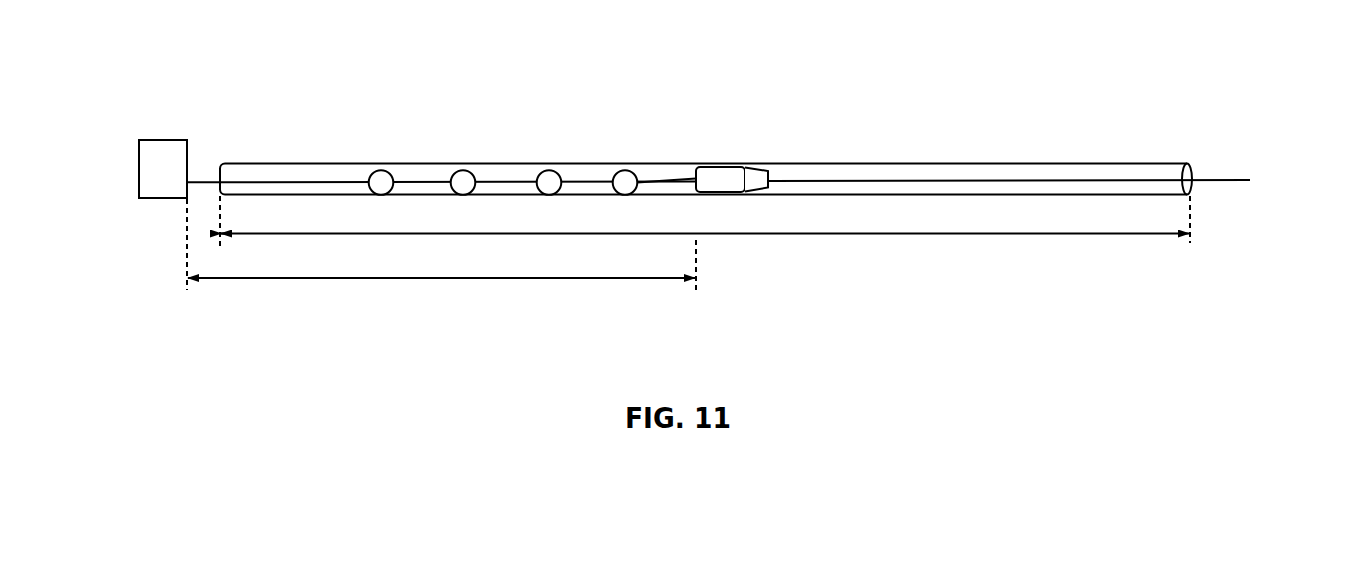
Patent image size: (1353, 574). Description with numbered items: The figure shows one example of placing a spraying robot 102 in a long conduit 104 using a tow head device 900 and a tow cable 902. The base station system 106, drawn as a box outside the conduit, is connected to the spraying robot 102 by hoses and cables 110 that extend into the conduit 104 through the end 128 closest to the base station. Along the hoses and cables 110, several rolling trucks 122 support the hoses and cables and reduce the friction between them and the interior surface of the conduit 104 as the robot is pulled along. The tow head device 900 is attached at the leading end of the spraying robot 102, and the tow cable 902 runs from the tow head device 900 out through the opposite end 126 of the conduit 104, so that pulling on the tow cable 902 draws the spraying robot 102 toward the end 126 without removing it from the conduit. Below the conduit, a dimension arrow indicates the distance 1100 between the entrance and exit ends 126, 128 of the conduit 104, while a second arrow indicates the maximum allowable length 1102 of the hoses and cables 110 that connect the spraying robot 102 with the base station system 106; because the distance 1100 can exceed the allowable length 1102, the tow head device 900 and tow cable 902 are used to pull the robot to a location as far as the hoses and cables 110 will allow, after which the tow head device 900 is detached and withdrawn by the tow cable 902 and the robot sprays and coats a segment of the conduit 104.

The base station system 106 is at (163, 140).
The hoses and cables 110 is at (216, 178).
The end of the conduit 128 is at (219, 185).
The rolling trucks 122 is at (382, 170).
The spraying robot 102 is at (712, 167).
The tow head device 900 is at (757, 172).
The tow cable 902 is at (906, 180).
The conduit 104 is at (1060, 163).
The opposite end of the conduit 126 is at (1194, 184).
The distance 1100 is at (875, 234).
The maximum allowable length 1102 is at (442, 278).